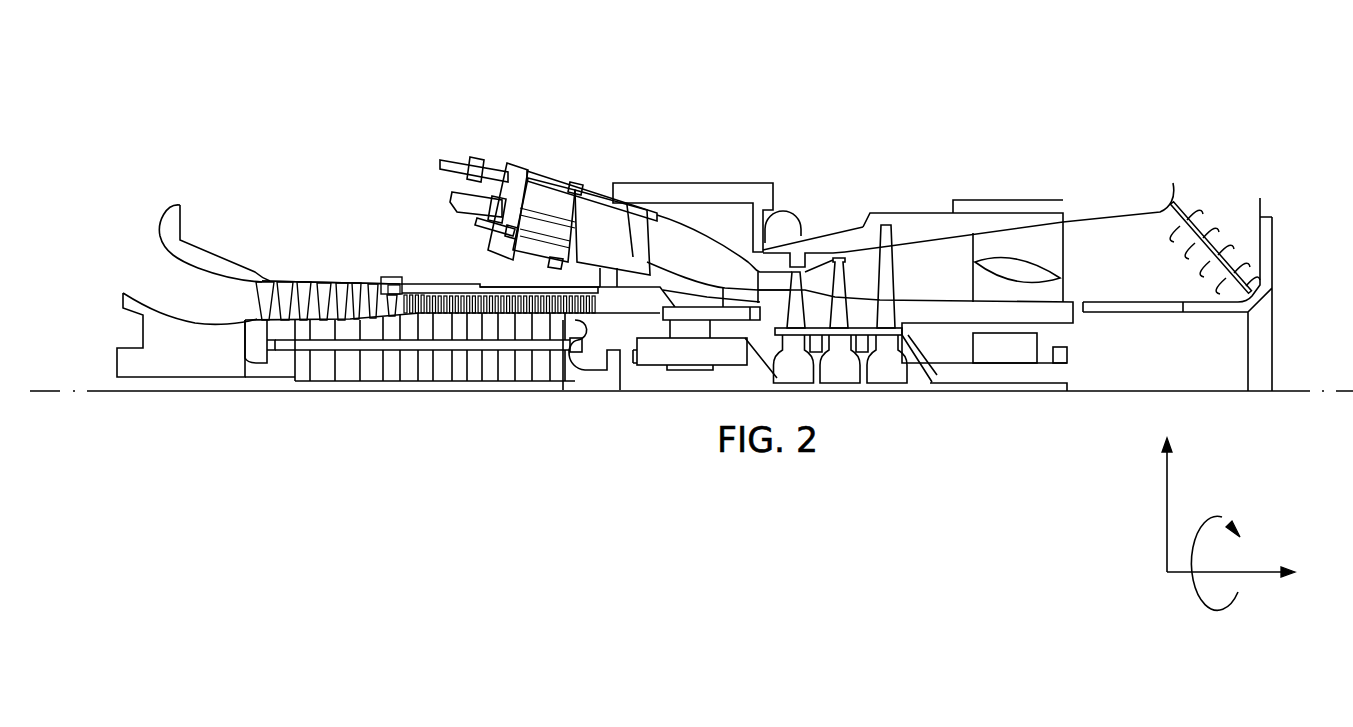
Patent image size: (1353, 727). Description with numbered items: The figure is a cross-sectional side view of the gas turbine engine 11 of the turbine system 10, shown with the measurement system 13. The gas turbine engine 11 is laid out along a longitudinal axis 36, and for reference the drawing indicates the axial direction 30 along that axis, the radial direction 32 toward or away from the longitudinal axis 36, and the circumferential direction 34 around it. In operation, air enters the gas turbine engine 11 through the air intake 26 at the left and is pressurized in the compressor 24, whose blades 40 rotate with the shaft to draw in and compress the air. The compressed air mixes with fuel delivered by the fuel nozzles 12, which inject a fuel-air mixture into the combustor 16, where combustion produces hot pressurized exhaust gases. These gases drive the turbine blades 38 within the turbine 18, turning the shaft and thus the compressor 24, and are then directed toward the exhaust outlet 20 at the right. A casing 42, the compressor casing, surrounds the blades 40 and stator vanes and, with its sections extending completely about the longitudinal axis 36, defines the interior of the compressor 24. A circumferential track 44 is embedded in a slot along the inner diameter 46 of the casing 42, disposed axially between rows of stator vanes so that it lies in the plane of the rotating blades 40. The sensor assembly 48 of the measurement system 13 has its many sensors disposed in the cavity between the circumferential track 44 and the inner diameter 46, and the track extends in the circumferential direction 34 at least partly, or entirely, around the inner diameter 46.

The turbine system 10 is at (447, 83).
The gas turbine engine 11 is at (511, 175).
The fuel nozzles 12 is at (507, 170).
The measurement system 13 is at (395, 295).
The combustor 16 is at (727, 181).
The turbine 18 is at (1065, 181).
The exhaust outlet 20 is at (1198, 225).
The compressor 24 is at (473, 240).
The air intake 26 is at (178, 297).
The axial direction 30 is at (1260, 574).
The radial direction 32 is at (1167, 502).
The circumferential direction 34 is at (1222, 518).
The longitudinal axis 36 is at (1343, 390).
The turbine blades 38 is at (842, 258).
The blades 40 is at (263, 282).
The casing 42 is at (440, 283).
The circumferential track 44 is at (400, 283).
The inner diameter 46 is at (345, 302).
The sensor assembly 48 is at (383, 276).